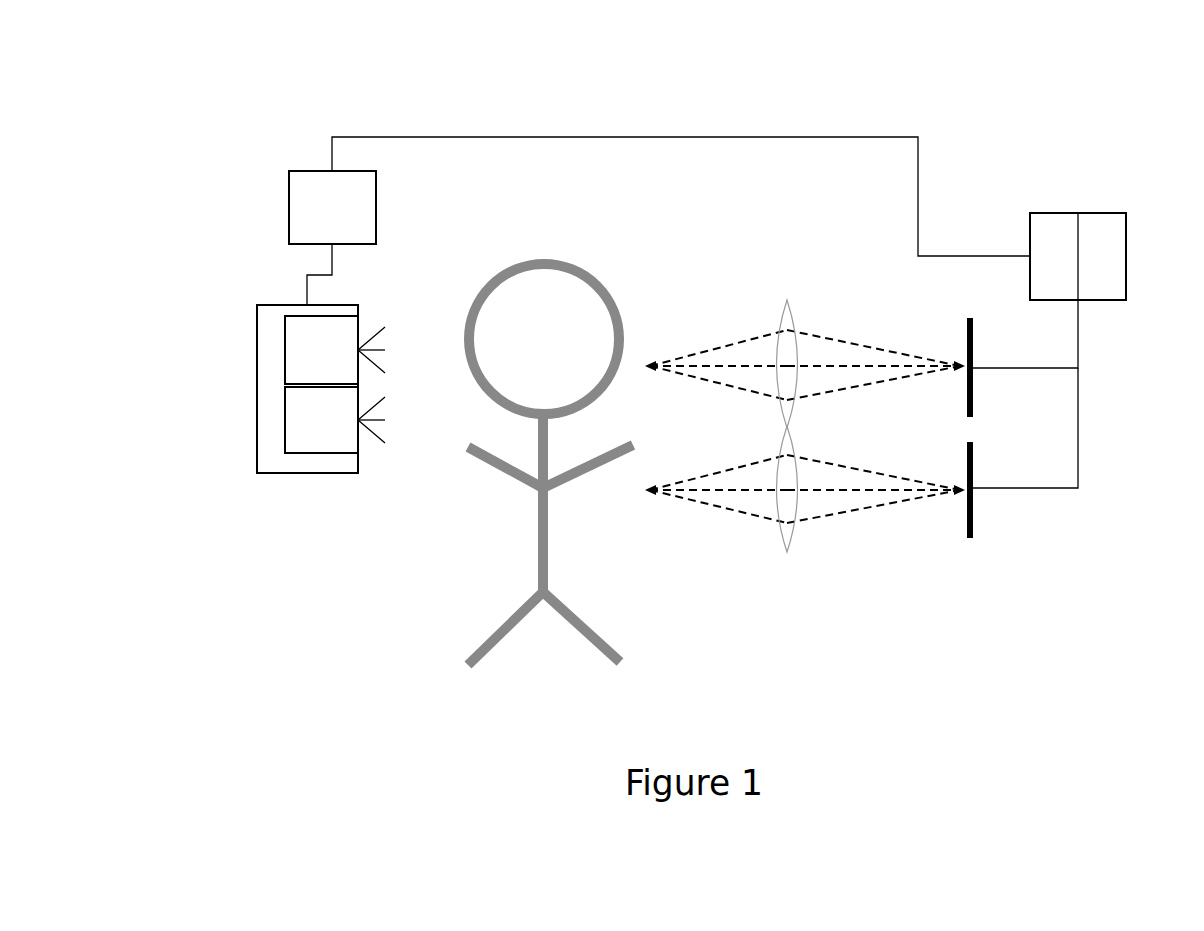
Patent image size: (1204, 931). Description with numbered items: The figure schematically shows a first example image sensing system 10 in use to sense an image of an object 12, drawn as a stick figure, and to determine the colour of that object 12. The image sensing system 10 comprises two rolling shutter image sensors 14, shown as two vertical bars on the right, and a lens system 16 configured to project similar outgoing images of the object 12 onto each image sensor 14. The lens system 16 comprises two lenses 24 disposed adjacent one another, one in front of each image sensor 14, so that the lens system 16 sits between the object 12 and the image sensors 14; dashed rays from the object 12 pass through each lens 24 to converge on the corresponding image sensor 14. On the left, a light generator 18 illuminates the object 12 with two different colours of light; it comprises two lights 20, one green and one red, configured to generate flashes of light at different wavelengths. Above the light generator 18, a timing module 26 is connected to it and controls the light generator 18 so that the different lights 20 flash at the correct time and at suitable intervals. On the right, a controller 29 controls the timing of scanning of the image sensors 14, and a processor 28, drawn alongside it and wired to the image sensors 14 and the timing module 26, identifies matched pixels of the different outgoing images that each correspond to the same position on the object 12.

The image sensing system 10 is at (398, 86).
The object 12 is at (597, 286).
The rolling shutter image sensor 14 is at (973, 348).
The lens system 16 is at (787, 294).
The light generator 18 is at (273, 472).
The light 20 is at (285, 350).
The lens 24 is at (787, 320).
The timing module 26 is at (289, 177).
The processor 28 is at (1110, 254).
The controller 29 is at (1042, 233).